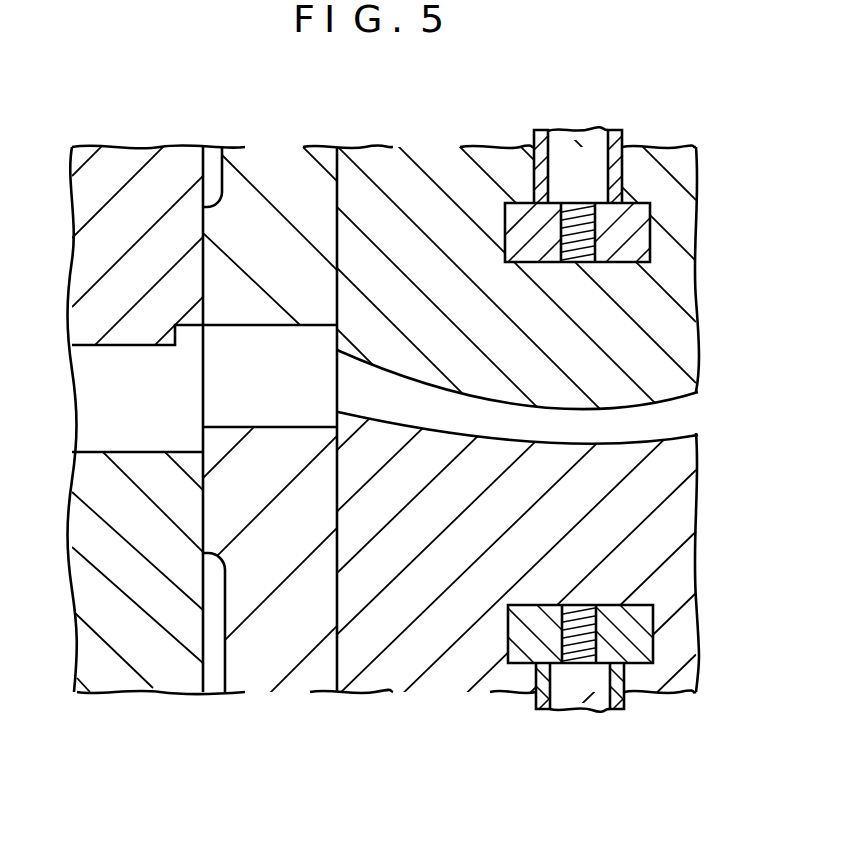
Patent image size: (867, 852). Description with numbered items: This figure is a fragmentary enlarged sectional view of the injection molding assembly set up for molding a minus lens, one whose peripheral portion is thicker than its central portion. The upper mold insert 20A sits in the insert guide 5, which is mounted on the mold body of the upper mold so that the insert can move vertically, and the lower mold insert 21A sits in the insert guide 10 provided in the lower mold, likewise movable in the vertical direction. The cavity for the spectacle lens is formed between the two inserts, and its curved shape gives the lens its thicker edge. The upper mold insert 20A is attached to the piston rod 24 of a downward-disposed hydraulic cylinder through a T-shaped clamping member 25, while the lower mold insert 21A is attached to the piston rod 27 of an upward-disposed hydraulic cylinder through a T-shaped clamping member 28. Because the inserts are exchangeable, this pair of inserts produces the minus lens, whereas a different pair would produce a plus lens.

The insert guide 5 is at (275, 180).
The insert guide 10 is at (273, 660).
The upper mold insert 20A is at (683, 337).
The lower mold insert 21A is at (680, 506).
The piston rod 24 is at (578, 145).
The T-shaped clamping member 25 is at (638, 220).
The piston rod 27 is at (577, 695).
The T-shaped clamping member 28 is at (637, 637).